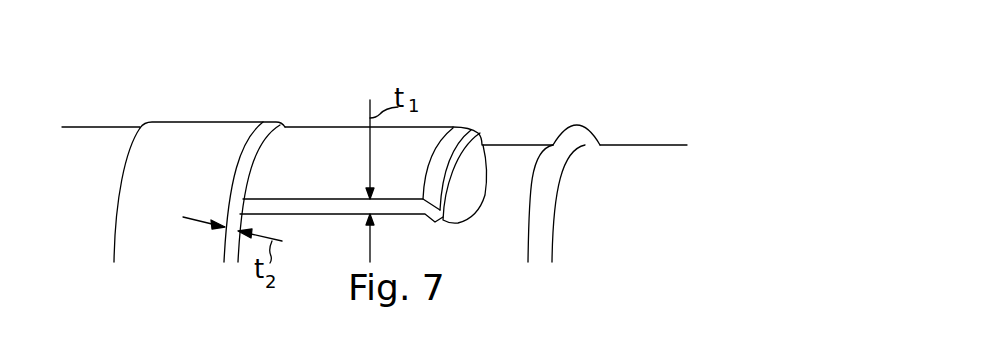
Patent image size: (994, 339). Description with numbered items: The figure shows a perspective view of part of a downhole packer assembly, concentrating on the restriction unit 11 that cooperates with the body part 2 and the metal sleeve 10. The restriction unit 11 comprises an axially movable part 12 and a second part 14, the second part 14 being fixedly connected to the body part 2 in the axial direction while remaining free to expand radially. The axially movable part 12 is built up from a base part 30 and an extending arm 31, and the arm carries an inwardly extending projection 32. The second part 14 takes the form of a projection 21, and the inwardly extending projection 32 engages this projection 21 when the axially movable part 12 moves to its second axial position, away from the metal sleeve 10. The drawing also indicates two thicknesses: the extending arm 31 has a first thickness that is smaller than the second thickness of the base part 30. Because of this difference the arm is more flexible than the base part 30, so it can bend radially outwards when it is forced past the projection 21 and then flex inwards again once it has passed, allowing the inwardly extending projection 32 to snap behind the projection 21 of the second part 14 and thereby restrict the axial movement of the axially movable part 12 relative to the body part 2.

The metal sleeve 10 is at (112, 145).
The base part 30 is at (195, 140).
The axially movable part 12 is at (218, 135).
The restriction unit 11 is at (327, 147).
The extending arm 31 is at (427, 137).
The inwardly extending projection 32 is at (488, 145).
The second part 14 is at (572, 142).
The projection 21 is at (583, 140).
The body part 2 is at (655, 163).